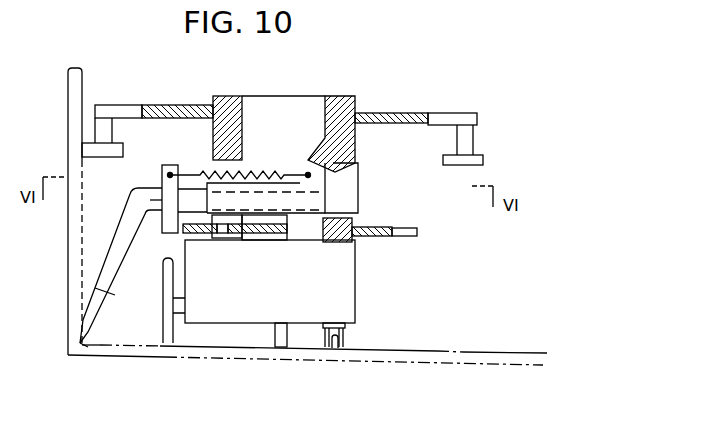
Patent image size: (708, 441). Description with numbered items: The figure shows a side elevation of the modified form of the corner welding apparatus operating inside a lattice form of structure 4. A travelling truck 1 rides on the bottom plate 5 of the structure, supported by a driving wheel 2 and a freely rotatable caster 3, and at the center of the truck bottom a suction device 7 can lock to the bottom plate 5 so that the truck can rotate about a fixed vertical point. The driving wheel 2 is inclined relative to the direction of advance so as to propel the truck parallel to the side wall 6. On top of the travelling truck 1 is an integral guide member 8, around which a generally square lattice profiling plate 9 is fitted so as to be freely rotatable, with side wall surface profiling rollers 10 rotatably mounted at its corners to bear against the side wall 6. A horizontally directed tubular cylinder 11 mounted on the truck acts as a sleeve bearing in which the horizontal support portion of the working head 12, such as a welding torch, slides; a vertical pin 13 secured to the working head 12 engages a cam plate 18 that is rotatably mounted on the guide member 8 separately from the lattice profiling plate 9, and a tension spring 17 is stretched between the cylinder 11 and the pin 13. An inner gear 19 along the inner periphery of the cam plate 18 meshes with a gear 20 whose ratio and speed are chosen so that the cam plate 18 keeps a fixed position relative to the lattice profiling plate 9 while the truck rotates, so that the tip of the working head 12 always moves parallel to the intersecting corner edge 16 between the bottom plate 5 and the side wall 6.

The travelling truck 1 is at (263, 310).
The driving wheel 2 is at (165, 333).
The freely rotatable caster 3 is at (343, 349).
The lattice form of structure 4 is at (68, 358).
The bottom plate 5 is at (428, 362).
The side wall 6 is at (78, 102).
The suction device 7 is at (287, 330).
The guide member 8 is at (339, 96).
The lattice profiling plate 9 is at (401, 113).
The side wall surface profiling roller 10 is at (485, 156).
The tubular cylinder 11 is at (330, 183).
The working head 12 is at (110, 262).
The pin 13 is at (145, 222).
The welding line / intersecting corner edge 16 is at (88, 347).
The tension spring 17 is at (268, 174).
The cam plate 18 is at (378, 240).
The inner gear 19 is at (345, 247).
The gear 20 is at (248, 245).